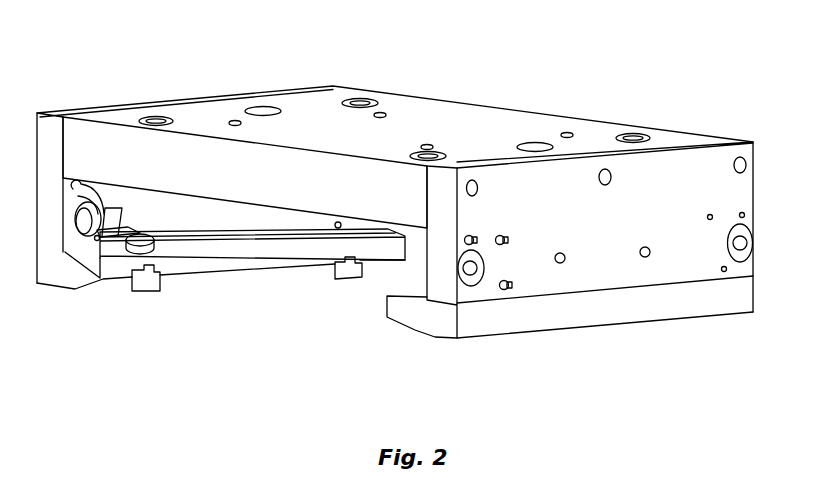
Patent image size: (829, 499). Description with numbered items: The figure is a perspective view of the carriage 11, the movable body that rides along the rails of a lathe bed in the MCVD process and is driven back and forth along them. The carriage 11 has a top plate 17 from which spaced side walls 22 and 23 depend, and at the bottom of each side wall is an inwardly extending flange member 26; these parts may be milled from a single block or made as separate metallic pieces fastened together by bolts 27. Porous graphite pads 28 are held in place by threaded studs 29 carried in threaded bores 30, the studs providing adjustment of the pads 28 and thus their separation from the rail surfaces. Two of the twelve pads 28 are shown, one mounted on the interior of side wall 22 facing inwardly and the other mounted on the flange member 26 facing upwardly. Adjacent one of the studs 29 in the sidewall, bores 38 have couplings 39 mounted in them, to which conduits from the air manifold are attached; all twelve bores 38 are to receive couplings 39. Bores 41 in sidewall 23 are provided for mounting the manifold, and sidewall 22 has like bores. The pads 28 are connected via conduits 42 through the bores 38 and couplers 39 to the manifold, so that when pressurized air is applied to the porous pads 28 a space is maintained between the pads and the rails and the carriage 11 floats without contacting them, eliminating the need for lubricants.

The carriage 11 is at (143, 96).
The top plate 17 is at (78, 130).
The side wall 22 is at (48, 162).
The side wall 23 is at (742, 182).
The flange member 26 is at (53, 280).
The bolts 27 is at (479, 188).
The pads 28 is at (85, 220).
The threaded studs 29 is at (160, 118).
The threaded bores 30 is at (140, 118).
The bores 38 is at (745, 215).
The couplings 39 is at (470, 235).
The bores 41 is at (642, 248).
The conduits 42 is at (121, 213).